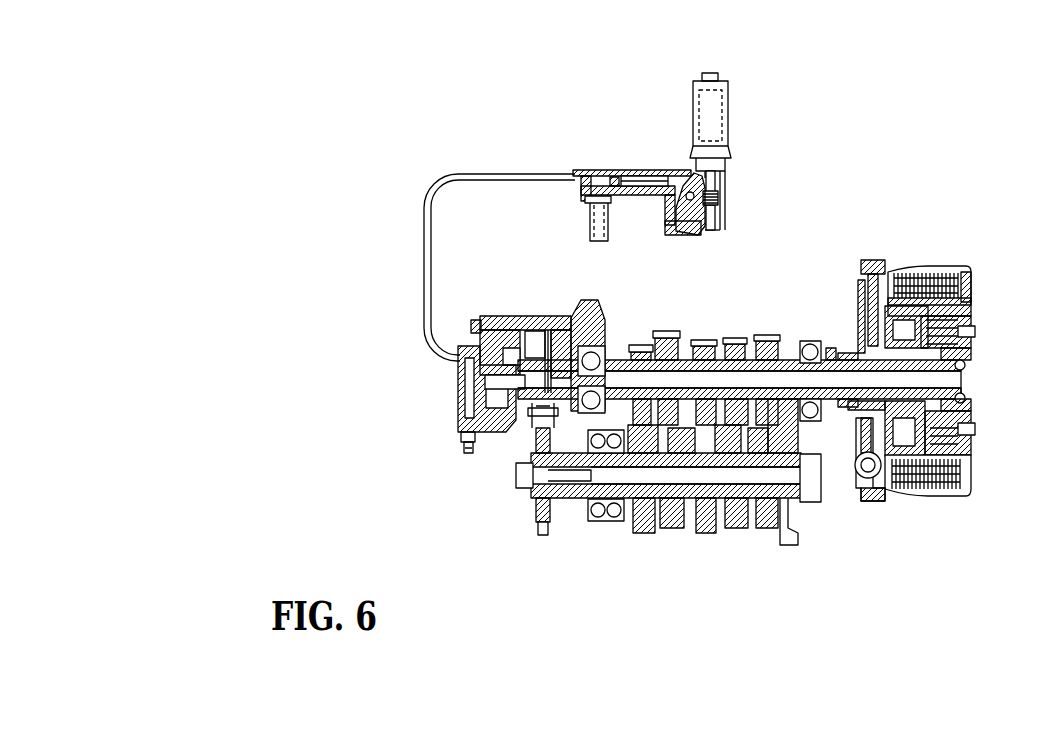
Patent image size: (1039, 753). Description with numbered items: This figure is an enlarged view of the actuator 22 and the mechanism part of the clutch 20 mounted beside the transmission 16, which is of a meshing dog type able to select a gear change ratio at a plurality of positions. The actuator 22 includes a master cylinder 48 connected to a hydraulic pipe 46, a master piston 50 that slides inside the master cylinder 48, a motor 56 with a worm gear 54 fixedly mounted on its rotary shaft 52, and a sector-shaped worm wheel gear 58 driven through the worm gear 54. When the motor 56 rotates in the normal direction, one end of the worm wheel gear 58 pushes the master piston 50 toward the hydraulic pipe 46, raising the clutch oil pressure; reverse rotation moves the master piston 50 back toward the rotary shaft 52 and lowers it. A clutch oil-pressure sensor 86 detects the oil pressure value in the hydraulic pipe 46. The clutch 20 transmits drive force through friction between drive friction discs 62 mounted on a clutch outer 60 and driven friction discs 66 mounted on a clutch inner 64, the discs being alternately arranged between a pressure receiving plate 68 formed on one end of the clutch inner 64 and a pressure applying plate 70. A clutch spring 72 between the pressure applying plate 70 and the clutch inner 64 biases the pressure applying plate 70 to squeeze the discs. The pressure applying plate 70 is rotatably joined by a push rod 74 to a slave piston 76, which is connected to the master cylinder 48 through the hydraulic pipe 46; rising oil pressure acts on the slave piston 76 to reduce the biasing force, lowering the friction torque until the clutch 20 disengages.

The transmission 16 is at (693, 448).
The clutch 20 is at (937, 377).
The actuator 22 is at (728, 165).
The hydraulic pipe 46 is at (492, 166).
The master cylinder 48 is at (575, 162).
The master piston 50 is at (632, 168).
The rotary shaft 52 is at (708, 175).
The worm gear 54 is at (712, 192).
The motor 56 is at (685, 99).
The worm wheel gear 58 is at (668, 219).
The clutch outer 60 is at (895, 260).
The drive friction discs 62 is at (922, 260).
The clutch inner 64 is at (920, 490).
The driven friction discs 66 is at (960, 282).
The pressure receiving plate 68 is at (862, 494).
The pressure applying plate 70 is at (962, 450).
The clutch spring 72 is at (967, 421).
The push rod 74 is at (672, 340).
The slave piston 76 is at (455, 405).
The clutch oil-pressure sensor 86 is at (582, 213).